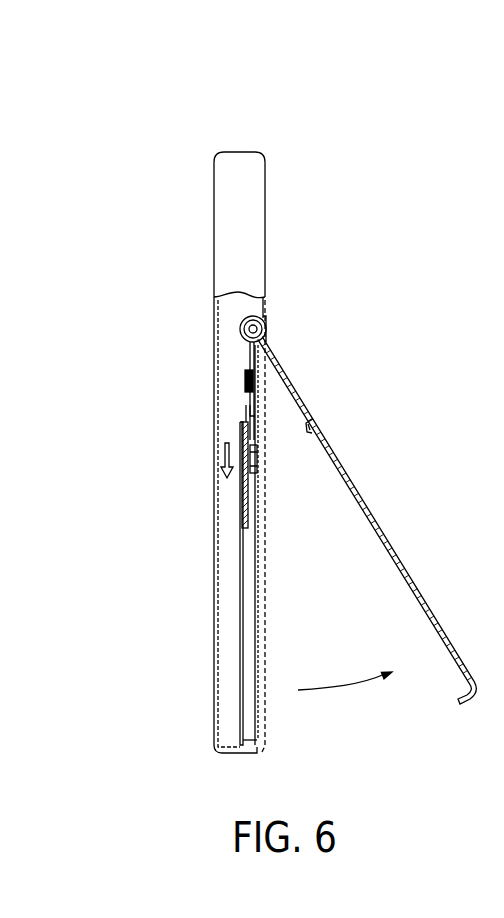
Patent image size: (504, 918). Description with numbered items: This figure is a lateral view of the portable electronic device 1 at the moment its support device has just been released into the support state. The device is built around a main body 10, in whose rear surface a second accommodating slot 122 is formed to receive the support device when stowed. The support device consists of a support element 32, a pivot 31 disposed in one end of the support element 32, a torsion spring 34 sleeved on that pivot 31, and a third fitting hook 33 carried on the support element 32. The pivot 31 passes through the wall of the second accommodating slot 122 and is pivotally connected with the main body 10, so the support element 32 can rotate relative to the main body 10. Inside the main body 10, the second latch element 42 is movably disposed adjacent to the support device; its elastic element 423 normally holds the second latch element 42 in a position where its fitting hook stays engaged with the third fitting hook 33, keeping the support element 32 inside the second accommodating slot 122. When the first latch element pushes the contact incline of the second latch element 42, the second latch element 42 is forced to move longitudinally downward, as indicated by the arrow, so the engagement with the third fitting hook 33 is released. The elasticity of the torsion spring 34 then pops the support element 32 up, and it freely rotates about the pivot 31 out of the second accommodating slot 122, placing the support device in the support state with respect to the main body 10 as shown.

The portable electronic device 1 is at (196, 183).
The main body 10 is at (237, 272).
The second accommodating slot 122 is at (245, 638).
The pivot 31 is at (266, 330).
The support element 32 is at (374, 518).
The third fitting hook 33 is at (313, 434).
The torsion spring 34 is at (248, 350).
The second latch element 42 is at (243, 487).
The elastic element 423 is at (245, 385).